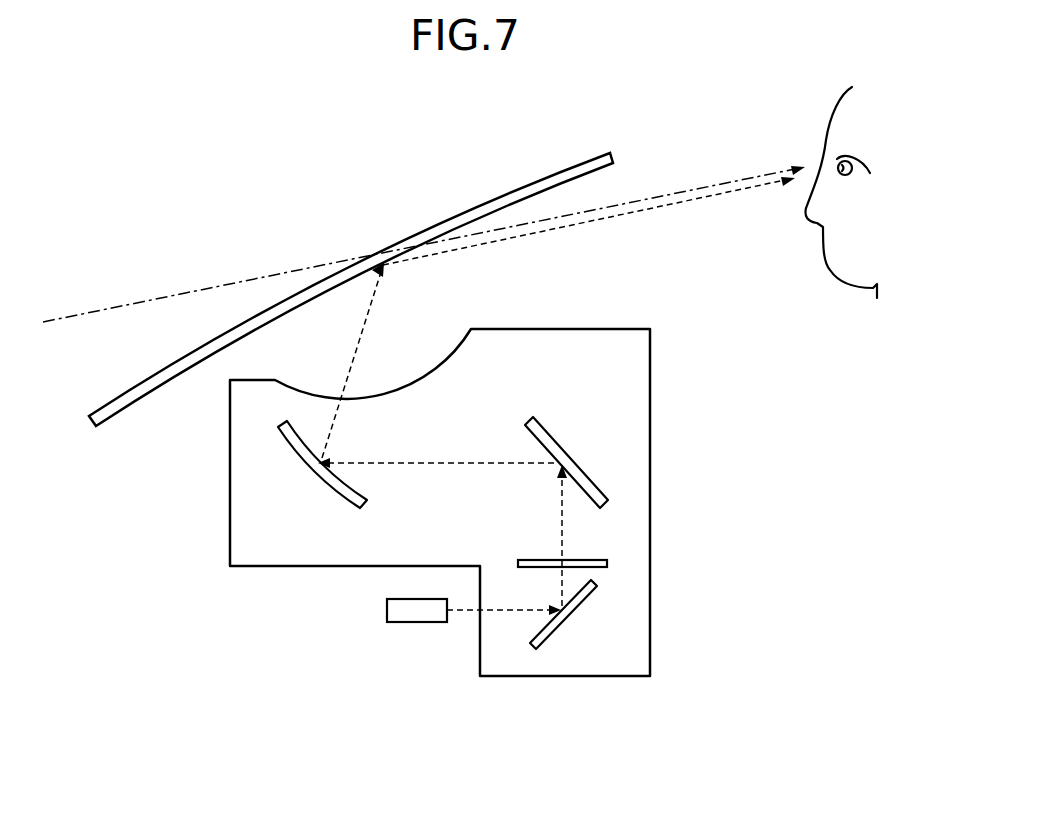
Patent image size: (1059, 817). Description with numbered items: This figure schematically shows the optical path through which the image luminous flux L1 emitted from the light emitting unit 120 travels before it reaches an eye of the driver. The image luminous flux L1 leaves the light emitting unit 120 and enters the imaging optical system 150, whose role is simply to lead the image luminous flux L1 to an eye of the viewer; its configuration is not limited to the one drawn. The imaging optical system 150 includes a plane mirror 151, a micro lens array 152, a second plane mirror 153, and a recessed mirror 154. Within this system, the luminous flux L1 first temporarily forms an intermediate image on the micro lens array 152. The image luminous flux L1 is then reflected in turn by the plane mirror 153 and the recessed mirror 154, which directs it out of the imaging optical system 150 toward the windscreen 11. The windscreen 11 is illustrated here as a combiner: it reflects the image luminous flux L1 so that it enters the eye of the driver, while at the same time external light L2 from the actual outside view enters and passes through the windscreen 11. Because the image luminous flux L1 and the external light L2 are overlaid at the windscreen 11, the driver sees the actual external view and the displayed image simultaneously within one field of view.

The windscreen 11 is at (519, 192).
The image luminous flux L1 is at (587, 222).
The external light L2 is at (260, 277).
The imaging optical system 150 is at (639, 387).
The plane mirror 151 is at (562, 615).
The micro lens array 152 is at (598, 557).
The plane mirror 153 is at (583, 477).
The recessed mirror 154 is at (307, 458).
The light emitting unit 120 is at (417, 623).